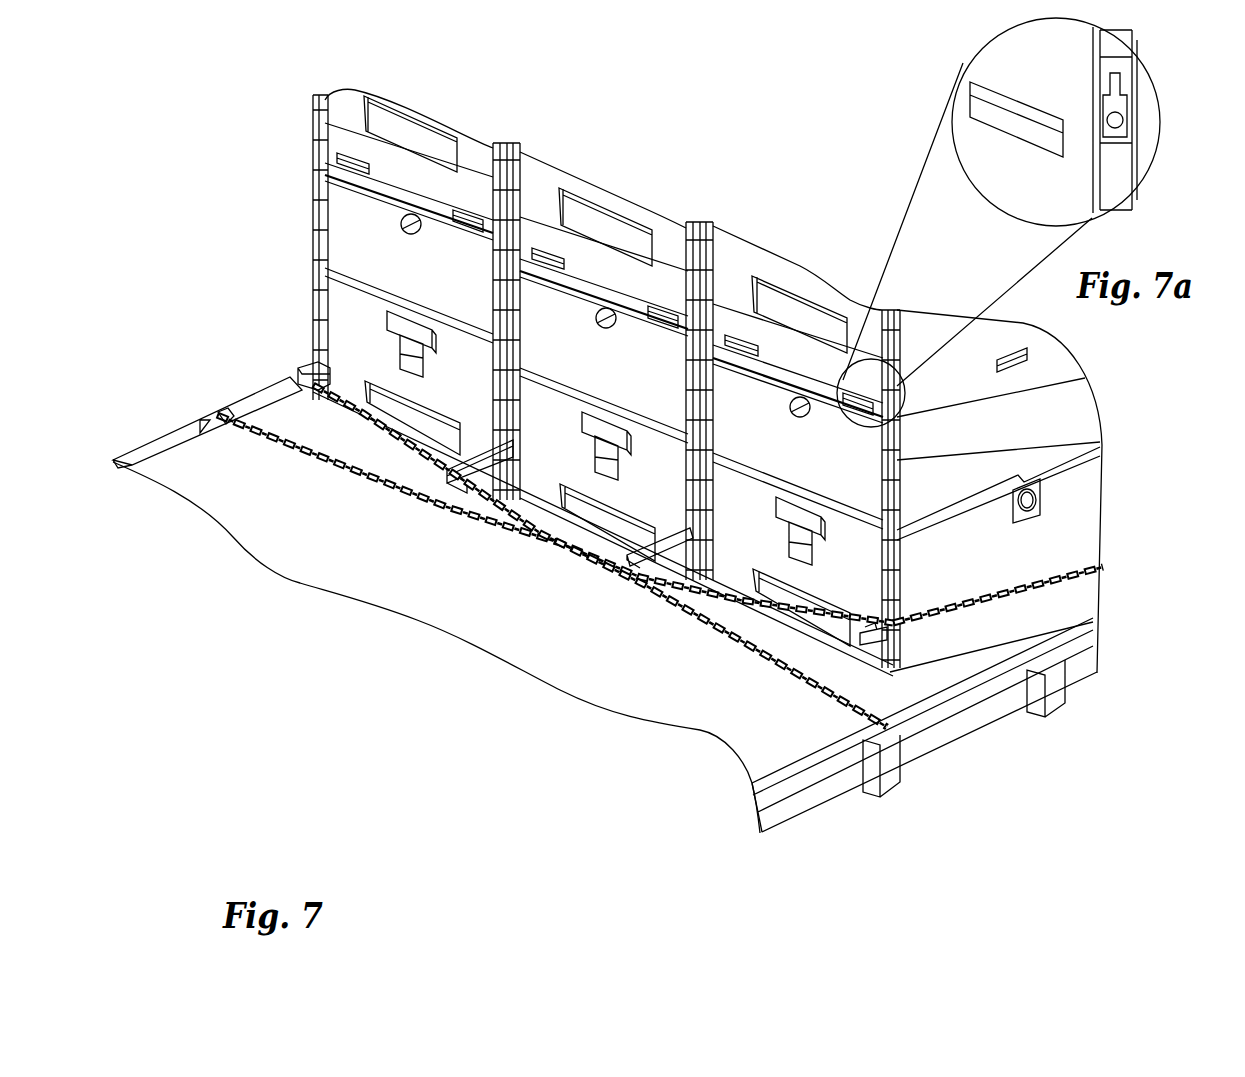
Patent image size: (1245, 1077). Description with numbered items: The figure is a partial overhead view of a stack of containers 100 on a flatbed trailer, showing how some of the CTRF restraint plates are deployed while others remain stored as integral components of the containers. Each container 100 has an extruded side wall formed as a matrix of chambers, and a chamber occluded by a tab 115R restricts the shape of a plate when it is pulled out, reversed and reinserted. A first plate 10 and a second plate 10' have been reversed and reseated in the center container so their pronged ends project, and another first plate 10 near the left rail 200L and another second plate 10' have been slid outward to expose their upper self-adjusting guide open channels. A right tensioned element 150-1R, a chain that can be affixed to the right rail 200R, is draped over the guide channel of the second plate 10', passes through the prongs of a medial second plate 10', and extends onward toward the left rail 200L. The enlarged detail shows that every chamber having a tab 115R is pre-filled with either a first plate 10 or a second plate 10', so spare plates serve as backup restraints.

In FIG. 7, the container 100 is at (706, 120).
In FIG. 7, the first plate 10 is at (239, 430).
In FIG. 7, the second plate 10' is at (645, 670).
In FIG. 7A, the second plate 10' is at (1158, 152).
In FIG. 7, the left rail 200L is at (173, 440).
In FIG. 7, the right rail 200R is at (927, 737).
In FIG. 7, the right tensioned element 150-1R is at (1010, 598).
In FIG. 7A, the tab 115R is at (1128, 85).